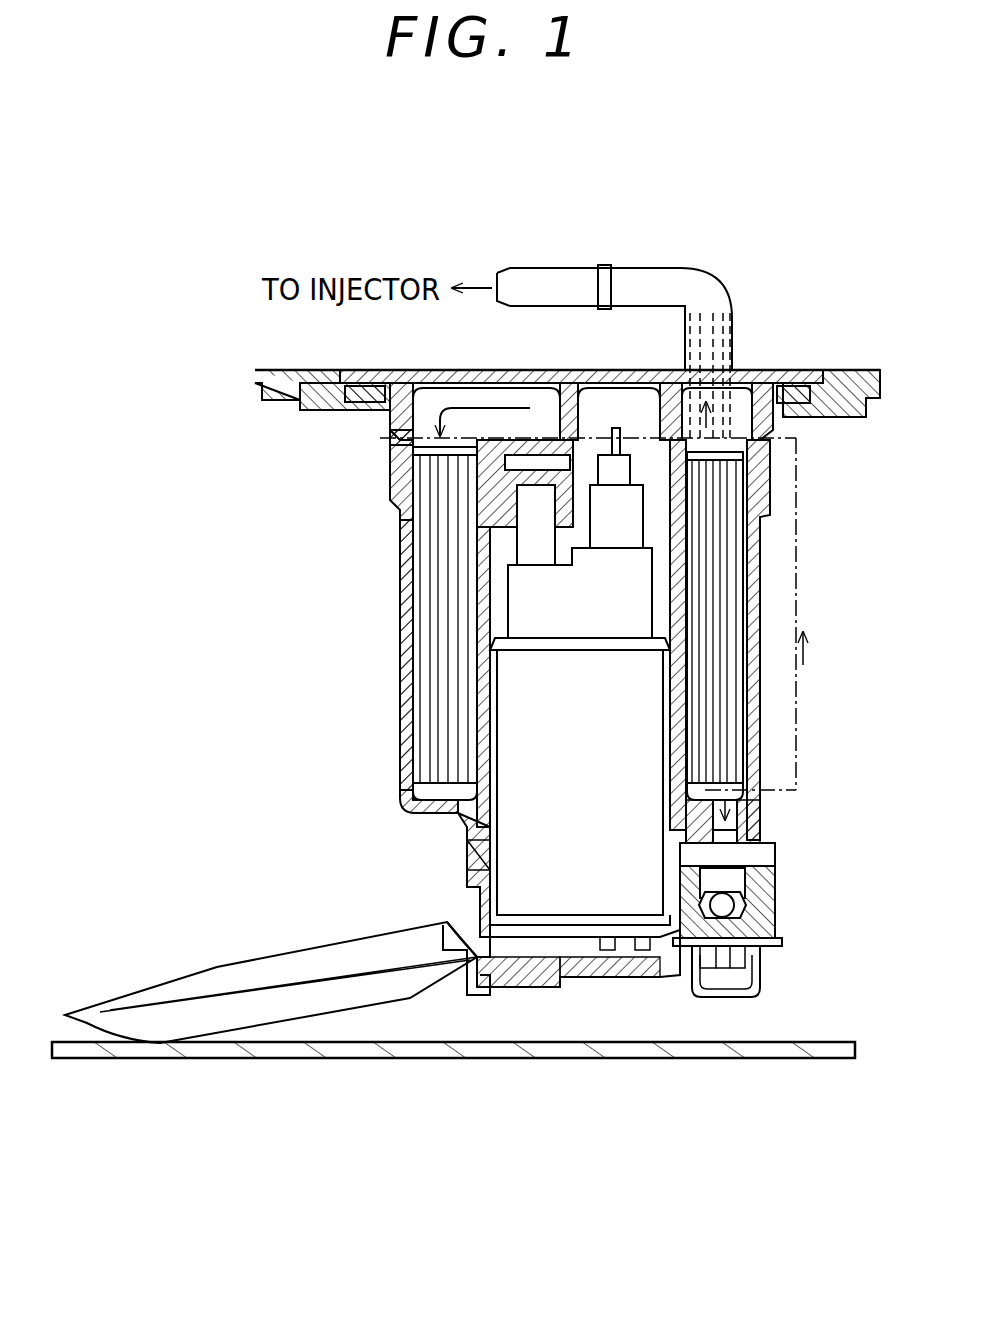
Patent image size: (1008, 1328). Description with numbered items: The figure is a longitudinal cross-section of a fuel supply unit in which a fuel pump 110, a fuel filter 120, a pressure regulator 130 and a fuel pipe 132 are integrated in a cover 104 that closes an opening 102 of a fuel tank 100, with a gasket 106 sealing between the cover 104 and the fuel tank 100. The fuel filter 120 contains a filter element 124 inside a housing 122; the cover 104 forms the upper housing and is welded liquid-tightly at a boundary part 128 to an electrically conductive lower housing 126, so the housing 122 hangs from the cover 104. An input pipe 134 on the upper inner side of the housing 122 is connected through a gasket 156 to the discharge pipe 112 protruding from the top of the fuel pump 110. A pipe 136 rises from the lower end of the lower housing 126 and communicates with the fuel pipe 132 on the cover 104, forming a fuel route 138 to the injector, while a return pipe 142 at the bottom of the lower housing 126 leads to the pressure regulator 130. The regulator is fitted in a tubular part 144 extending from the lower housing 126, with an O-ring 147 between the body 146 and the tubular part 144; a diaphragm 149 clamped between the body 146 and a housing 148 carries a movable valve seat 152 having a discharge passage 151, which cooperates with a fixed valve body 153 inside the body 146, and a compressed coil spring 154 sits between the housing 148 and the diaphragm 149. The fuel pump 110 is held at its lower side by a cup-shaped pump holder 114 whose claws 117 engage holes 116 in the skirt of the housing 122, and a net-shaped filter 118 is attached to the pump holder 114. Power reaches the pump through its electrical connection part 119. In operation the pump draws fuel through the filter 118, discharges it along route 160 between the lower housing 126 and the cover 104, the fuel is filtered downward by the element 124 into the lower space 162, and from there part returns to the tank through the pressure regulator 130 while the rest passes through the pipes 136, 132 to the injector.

The fuel tank 100 is at (850, 380).
The opening 102 is at (820, 370).
The cover 104 is at (400, 385).
The gasket 106 is at (792, 384).
The fuel pump 110 is at (648, 716).
The discharge pipe 112 is at (520, 580).
The pump holder 114 is at (588, 968).
The holes 116 is at (468, 840).
The claws 117 is at (468, 858).
The filter 118 is at (185, 990).
The electrical connection part 119 is at (626, 470).
The fuel filter 120 is at (380, 492).
The housing 122 is at (396, 566).
The filter element 124 is at (440, 672).
The lower housing 126 is at (408, 755).
The boundary part 128 is at (392, 440).
The pressure regulator 130 is at (748, 967).
The fuel pipe 132 is at (652, 286).
The input pipe 134 is at (566, 440).
The pipe 136 is at (796, 532).
The fuel route 138 is at (808, 470).
The return pipe 142 is at (752, 812).
The tubular part 144 is at (765, 852).
The body 146 is at (765, 872).
The O-ring 147 is at (728, 830).
The housing 148 is at (765, 990).
The diaphragm 149 is at (780, 930).
The discharge passage 151 is at (725, 940).
The valve seat 152 is at (733, 925).
The fixed valve body 153 is at (740, 905).
The compressed coil spring 154 is at (703, 970).
The gasket 156 is at (505, 500).
The route 160 is at (440, 410).
The lower space 162 is at (425, 790).